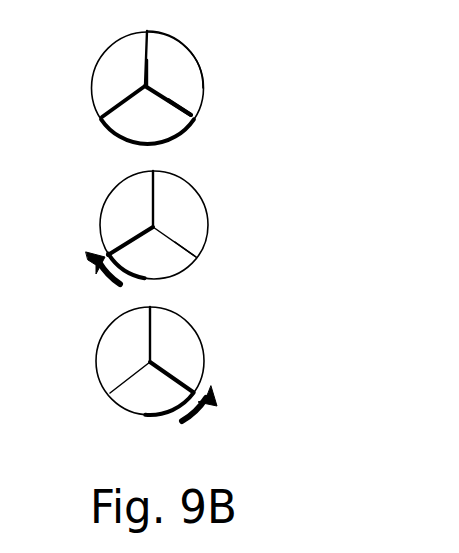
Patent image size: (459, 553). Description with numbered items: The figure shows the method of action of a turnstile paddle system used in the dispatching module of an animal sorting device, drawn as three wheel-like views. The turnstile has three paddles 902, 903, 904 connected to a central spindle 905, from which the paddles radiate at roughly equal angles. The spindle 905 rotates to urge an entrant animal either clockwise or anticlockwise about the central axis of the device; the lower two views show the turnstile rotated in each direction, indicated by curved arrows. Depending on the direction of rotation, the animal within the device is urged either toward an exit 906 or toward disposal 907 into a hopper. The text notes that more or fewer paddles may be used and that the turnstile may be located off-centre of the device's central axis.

The paddle 902 is at (150, 52).
The paddle 903 is at (178, 106).
The paddle 904 is at (142, 86).
The central spindle 905 is at (150, 82).
The exit 906 is at (111, 198).
The disposal 907 is at (173, 256).